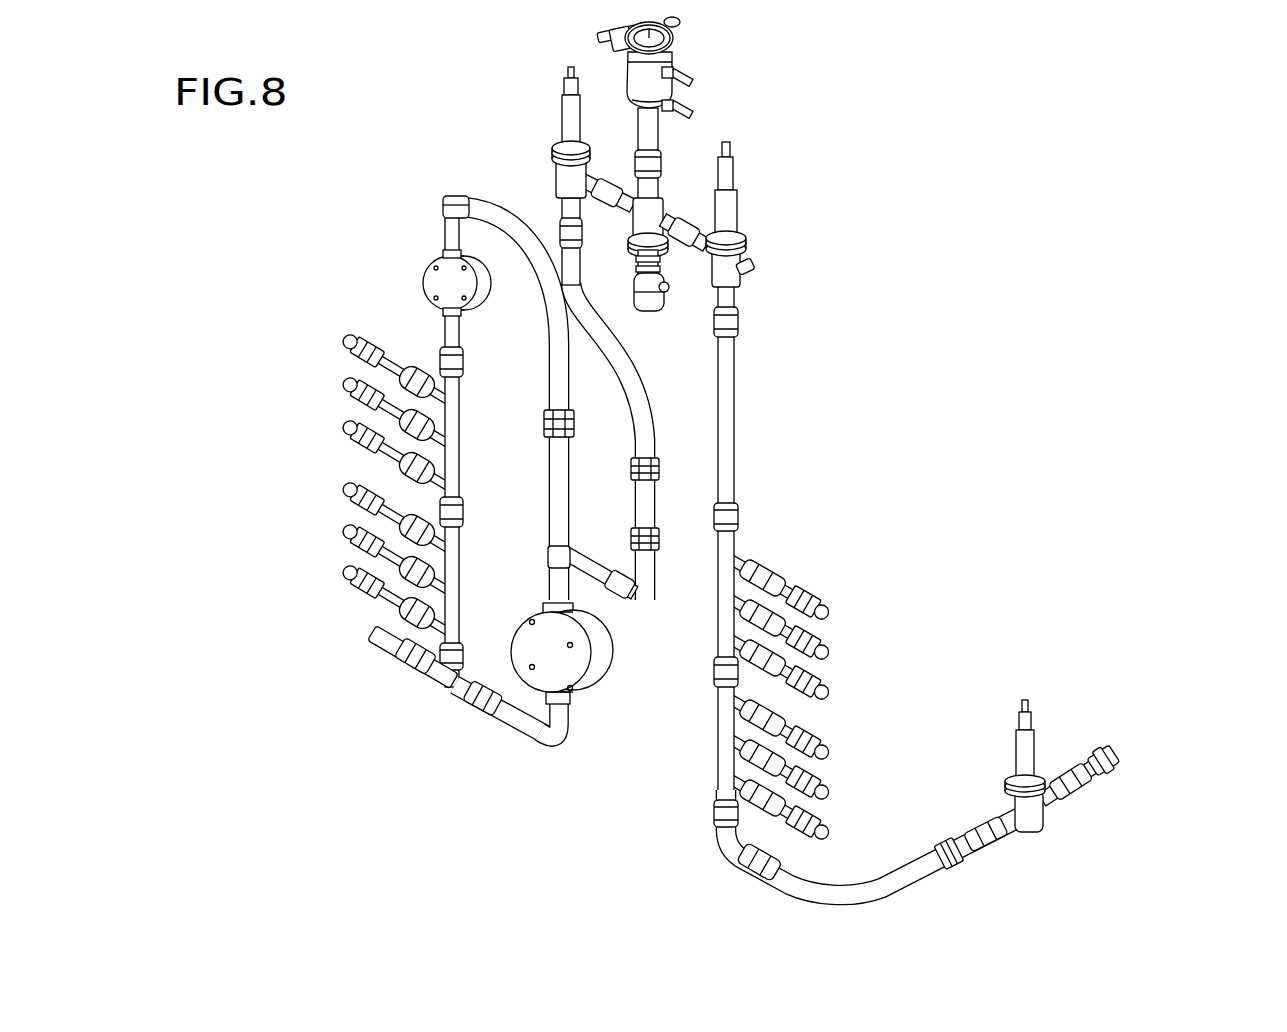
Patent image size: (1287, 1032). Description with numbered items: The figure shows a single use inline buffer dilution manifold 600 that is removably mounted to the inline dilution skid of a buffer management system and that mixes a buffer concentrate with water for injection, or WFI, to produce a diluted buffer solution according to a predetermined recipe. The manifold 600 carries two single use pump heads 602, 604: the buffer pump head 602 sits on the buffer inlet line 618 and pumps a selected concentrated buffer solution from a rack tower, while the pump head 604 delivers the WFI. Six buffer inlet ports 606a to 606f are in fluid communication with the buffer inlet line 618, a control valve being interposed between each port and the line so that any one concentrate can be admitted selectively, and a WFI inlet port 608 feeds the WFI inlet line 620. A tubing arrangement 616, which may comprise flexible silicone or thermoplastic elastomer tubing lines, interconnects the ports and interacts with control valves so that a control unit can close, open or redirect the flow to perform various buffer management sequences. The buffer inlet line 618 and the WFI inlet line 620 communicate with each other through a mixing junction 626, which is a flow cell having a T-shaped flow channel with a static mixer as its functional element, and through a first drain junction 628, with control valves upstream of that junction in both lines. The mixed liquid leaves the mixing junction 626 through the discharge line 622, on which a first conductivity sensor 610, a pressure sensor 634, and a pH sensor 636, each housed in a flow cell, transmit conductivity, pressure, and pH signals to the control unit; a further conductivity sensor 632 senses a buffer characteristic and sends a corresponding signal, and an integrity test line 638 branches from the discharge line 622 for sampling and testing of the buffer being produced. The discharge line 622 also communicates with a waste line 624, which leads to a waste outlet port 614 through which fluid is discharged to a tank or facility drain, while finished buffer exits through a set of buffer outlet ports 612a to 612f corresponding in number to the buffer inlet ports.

The manifold 600 is at (995, 252).
The pump head 602 is at (428, 277).
The pump head 604 is at (593, 672).
The buffer inlet port 606a is at (337, 590).
The buffer inlet port 606f is at (341, 568).
The WFI inlet port 608 is at (372, 633).
The conductivity sensor 610 is at (552, 148).
The buffer outlet port 612a is at (838, 855).
The buffer outlet port 612f is at (837, 800).
The waste outlet port 614 is at (1120, 750).
The tubing arrangement 616 is at (872, 615).
The buffer inlet line 618 is at (452, 403).
The WFI inlet line 620 is at (390, 650).
The discharge line 622 is at (740, 458).
The waste line 624 is at (993, 907).
The mixing junction 626 is at (553, 557).
The first drain junction 628 is at (447, 690).
The conductivity sensor 632 is at (1038, 826).
The pressure sensor 634 is at (650, 313).
The pH sensor 636 is at (748, 240).
The integrity test line 638 is at (665, 148).